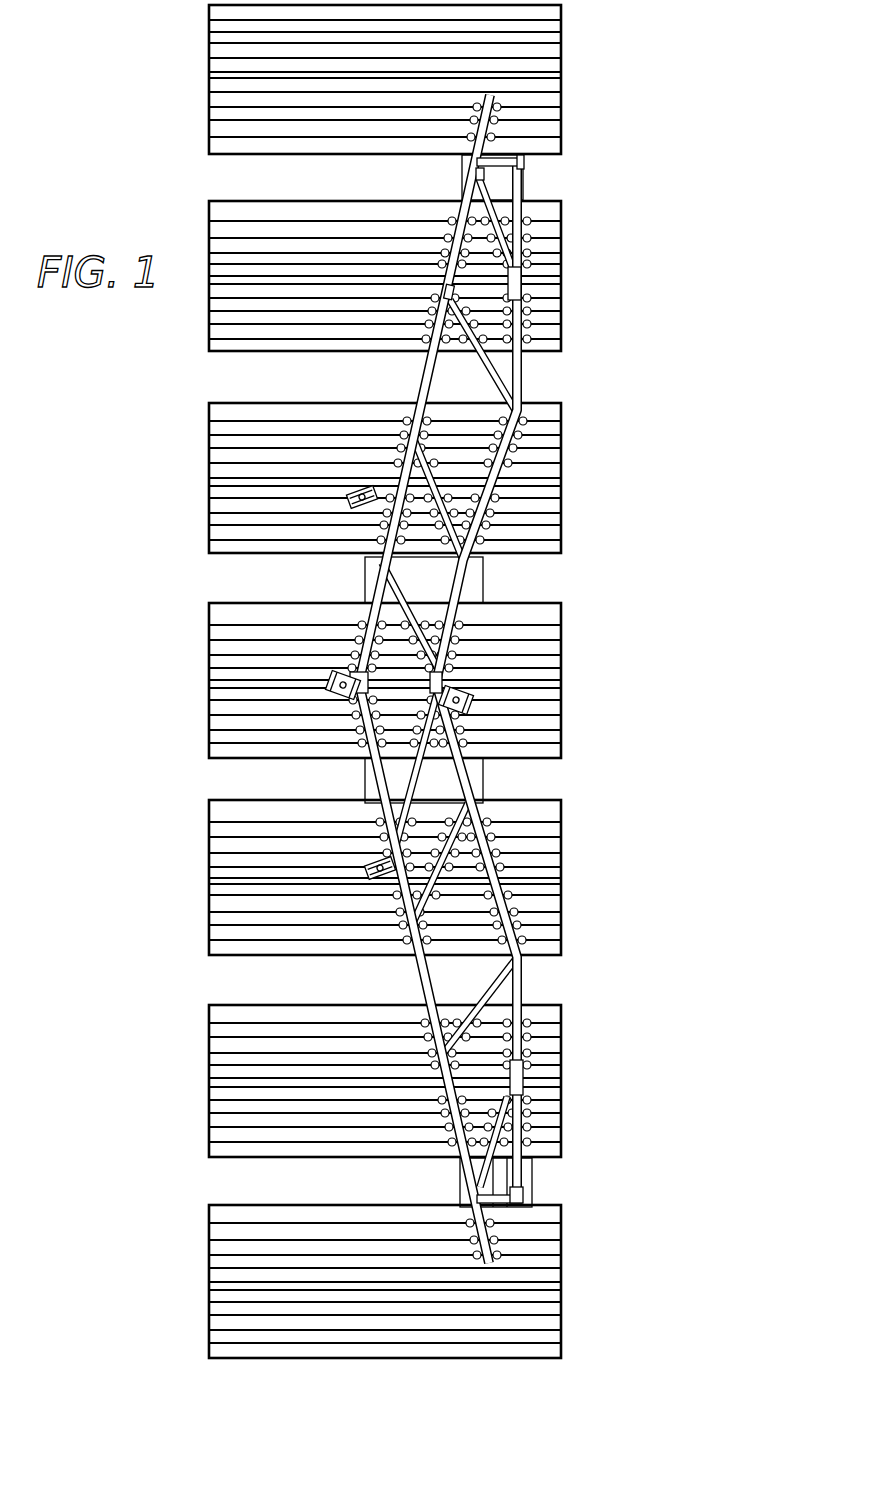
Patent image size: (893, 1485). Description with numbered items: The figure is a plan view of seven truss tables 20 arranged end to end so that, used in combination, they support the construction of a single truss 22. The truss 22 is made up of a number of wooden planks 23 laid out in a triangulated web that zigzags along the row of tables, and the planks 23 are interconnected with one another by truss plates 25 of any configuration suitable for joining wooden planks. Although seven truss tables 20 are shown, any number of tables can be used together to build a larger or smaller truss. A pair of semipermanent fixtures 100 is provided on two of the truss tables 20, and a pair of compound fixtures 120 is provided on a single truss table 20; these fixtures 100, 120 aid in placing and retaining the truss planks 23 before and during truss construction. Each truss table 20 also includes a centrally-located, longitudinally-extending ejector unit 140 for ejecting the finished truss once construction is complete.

The truss table 20 is at (565, 278).
The truss 22 is at (378, 384).
The wooden planks 23 is at (500, 840).
The truss plates 25 is at (475, 561).
The semipermanent fixtures 100 is at (357, 497).
The compound fixtures 120 is at (338, 706).
The ejector unit 140 is at (215, 686).